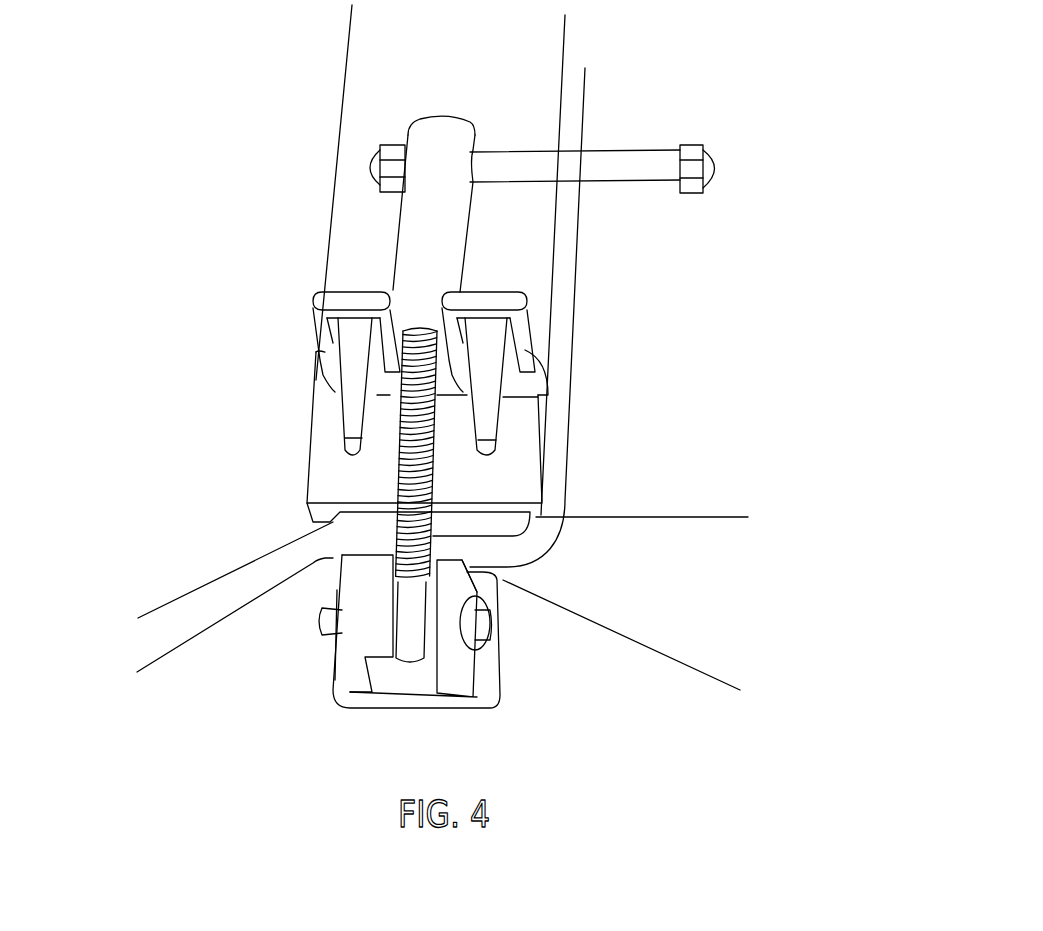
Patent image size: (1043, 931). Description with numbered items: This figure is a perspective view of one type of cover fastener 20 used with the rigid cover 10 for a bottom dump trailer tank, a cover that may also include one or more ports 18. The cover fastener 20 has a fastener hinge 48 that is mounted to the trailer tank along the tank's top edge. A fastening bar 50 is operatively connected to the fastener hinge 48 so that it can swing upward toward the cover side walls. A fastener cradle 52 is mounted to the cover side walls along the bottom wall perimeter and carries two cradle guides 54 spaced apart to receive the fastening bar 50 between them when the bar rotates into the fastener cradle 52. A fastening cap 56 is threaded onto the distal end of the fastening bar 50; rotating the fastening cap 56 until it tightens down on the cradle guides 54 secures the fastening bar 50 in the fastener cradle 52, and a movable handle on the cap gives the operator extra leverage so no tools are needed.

The rigid cover 10 is at (1025, 260).
The port 18 is at (627, 160).
The cover fastener 20 is at (723, 312).
The fastener hinge 48 is at (483, 684).
The fastening bar 50 is at (397, 488).
The fastener cradle 52 is at (538, 375).
The cradle guides 54 is at (460, 300).
The fastening cap 56 is at (433, 133).